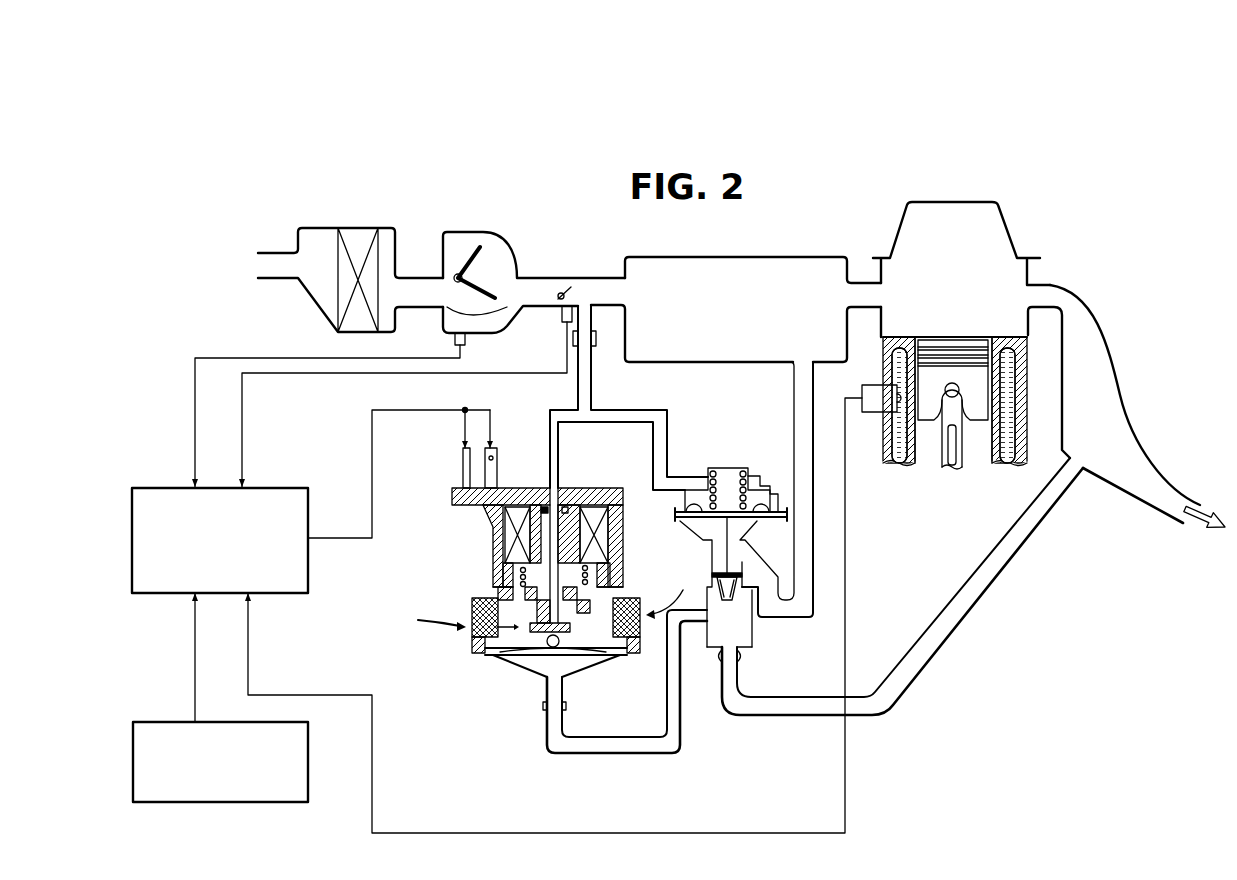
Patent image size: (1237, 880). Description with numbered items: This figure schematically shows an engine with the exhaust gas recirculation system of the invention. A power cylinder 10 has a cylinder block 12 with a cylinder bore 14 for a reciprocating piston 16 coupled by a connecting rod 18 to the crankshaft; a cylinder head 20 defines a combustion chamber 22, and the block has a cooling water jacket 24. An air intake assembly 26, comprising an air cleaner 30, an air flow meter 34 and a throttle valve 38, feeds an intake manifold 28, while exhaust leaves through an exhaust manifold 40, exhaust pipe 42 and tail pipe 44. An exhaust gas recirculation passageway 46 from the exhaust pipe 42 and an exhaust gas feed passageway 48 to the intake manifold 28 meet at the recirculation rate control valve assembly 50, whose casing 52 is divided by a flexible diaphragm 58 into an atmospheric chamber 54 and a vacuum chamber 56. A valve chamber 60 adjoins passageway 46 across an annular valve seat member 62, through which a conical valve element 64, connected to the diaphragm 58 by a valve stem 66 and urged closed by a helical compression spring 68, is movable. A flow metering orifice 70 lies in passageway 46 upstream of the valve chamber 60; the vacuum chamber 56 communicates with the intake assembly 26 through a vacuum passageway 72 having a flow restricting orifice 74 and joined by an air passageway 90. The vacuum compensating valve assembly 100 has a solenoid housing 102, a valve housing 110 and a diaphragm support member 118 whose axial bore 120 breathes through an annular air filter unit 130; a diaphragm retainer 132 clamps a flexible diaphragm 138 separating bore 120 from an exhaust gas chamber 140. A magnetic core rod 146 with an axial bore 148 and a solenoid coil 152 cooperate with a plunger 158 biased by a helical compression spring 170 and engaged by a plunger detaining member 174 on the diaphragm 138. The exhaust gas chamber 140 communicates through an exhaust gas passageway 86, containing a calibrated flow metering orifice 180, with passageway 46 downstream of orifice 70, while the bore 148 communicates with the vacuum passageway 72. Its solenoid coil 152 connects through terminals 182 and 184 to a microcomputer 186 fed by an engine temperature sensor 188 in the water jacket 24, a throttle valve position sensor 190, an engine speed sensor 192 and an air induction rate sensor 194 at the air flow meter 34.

The power cylinder 10 is at (1011, 235).
The cylinder block 12 is at (1030, 422).
The cylinder bore 14 is at (990, 458).
The reciprocating piston 16 is at (940, 468).
The connecting rod 18 is at (954, 470).
The cylinder head 20 is at (898, 223).
The combustion chamber 22 is at (966, 284).
The cooling water jacket 24 is at (1010, 462).
The air intake assembly 26 is at (495, 226).
The intake manifold 28 is at (783, 256).
The air cleaner 30 is at (397, 251).
The air flow meter 34 is at (480, 256).
The throttle valve 38 is at (572, 287).
The exhaust manifold 40 is at (1046, 284).
The exhaust pipe 42 is at (1118, 382).
The tail pipe 44 is at (1163, 517).
The exhaust gas recirculation passageway 46 is at (935, 652).
The exhaust gas feed passageway 48 is at (794, 393).
The exhaust recirculation rate control valve assembly 50 is at (708, 462).
The casing 52 is at (694, 520).
The atmospheric chamber 54 is at (716, 531).
The vacuum chamber 56 is at (724, 473).
The flexible diaphragm 58 is at (760, 488).
The valve chamber 60 is at (748, 560).
The annular valve seat member 62 is at (748, 608).
The conical valve element 64 is at (738, 608).
The valve stem 66 is at (714, 557).
The helical compression spring 68 is at (752, 471).
The flow metering orifice 70 is at (724, 673).
The vacuum passageway 72 is at (627, 409).
The flow restricting orifice 74 is at (588, 350).
The exhaust gas passageway 86 is at (630, 755).
The air passageway 90 is at (549, 423).
The vacuum compensating valve assembly 100 is at (532, 595).
The solenoid housing 102 is at (494, 535).
The valve housing 110 is at (488, 573).
The diaphragm support member 118 is at (494, 592).
The axial bore 120 is at (611, 655).
The annular air filter unit 130 is at (472, 613).
The diaphragm retainer 132 is at (514, 668).
The flexible diaphragm 138 is at (578, 667).
The exhaust gas chamber 140 is at (590, 672).
The magnetic core rod 146 is at (573, 497).
The axial bore 148 is at (552, 487).
The solenoid coil 152 is at (608, 515).
The plunger 158 is at (547, 630).
The helical compression spring 170 is at (612, 573).
The plunger detaining member 174 is at (510, 658).
The flow metering orifice 180 is at (547, 712).
The terminal 182 is at (463, 462).
The terminal 184 is at (497, 462).
The microcomputer 186 is at (308, 572).
The engine temperature sensor 188 is at (874, 413).
The throttle valve position sensor 190 is at (565, 318).
The engine speed sensor 192 is at (308, 768).
The air induction rate sensor 194 is at (468, 340).